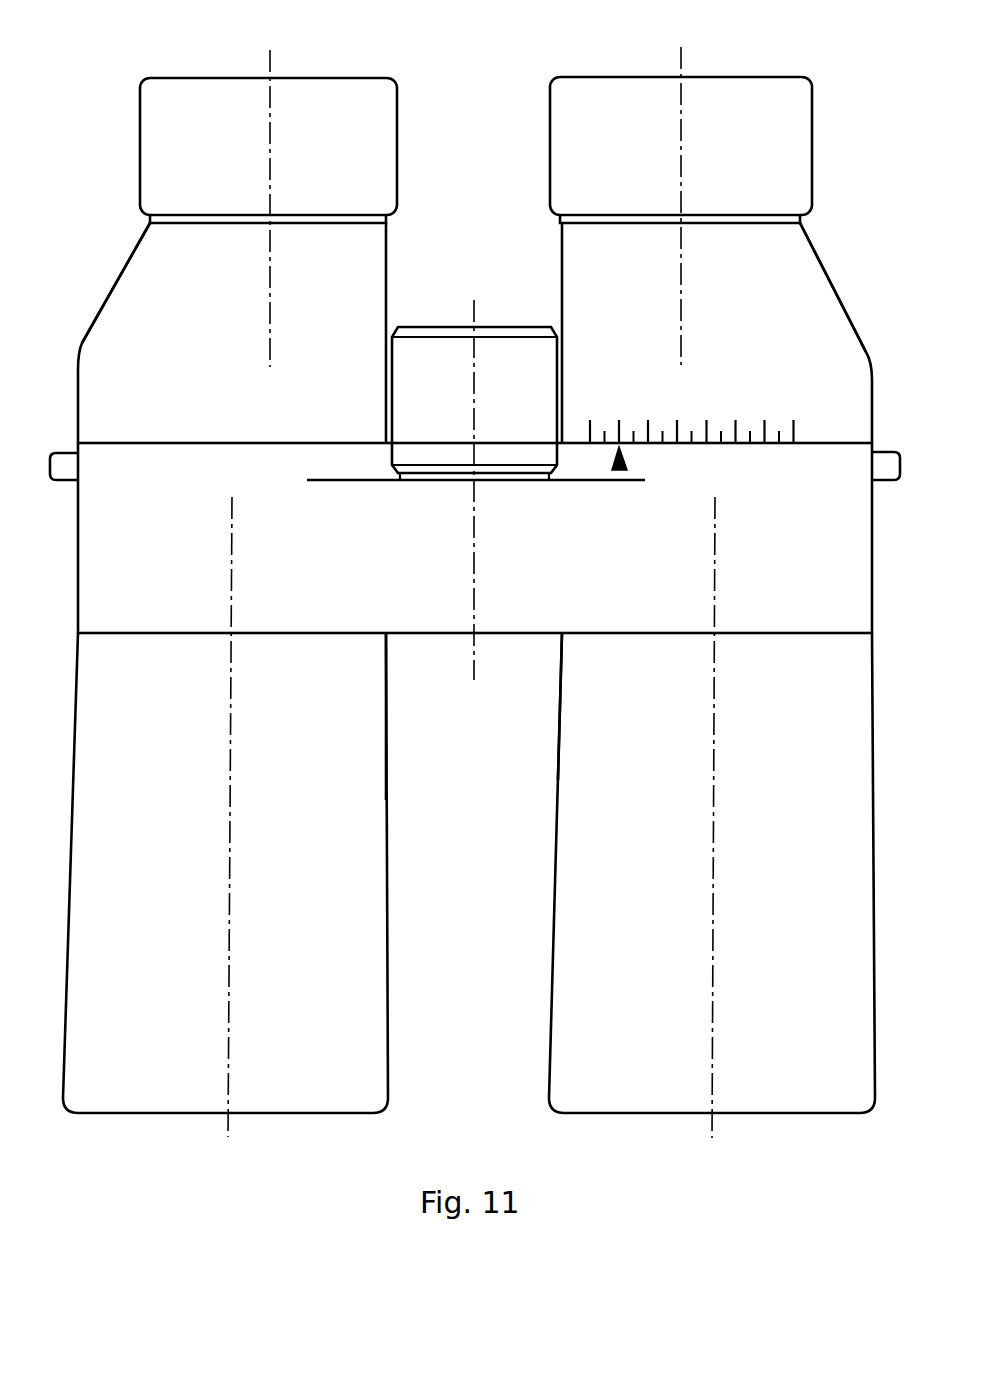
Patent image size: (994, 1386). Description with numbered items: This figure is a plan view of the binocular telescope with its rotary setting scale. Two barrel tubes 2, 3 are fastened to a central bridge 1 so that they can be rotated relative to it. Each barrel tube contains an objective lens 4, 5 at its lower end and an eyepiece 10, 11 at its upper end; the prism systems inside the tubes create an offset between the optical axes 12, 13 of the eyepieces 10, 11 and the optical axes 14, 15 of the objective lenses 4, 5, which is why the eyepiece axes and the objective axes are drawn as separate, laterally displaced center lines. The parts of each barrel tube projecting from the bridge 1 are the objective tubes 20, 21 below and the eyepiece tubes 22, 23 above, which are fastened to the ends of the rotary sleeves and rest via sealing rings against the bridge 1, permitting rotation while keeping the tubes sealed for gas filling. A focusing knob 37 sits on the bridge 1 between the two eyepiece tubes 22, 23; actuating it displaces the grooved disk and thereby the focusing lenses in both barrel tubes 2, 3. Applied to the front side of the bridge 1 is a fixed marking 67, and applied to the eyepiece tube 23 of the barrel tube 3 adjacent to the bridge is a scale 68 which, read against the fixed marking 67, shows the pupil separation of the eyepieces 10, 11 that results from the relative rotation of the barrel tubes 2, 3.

The bridge 1 is at (852, 548).
The barrel tube 2 is at (397, 879).
The barrel tube 3 is at (551, 880).
The objective lens 4 is at (182, 1084).
The objective lens 5 is at (655, 1090).
The eyepiece 10 is at (308, 104).
The eyepiece 11 is at (718, 104).
The optical axis of the eyepiece 12 is at (268, 300).
The optical axis of the eyepiece 13 is at (681, 299).
The optical axis of the objective lens 14 is at (232, 802).
The optical axis of the objective lens 15 is at (715, 798).
The objective tube 20 is at (403, 762).
The objective tube 21 is at (570, 762).
The eyepiece tube 22 is at (125, 304).
The eyepiece tube 23 is at (818, 293).
The focusing knob 37 is at (508, 352).
The fixed marking 67 is at (625, 470).
The scale 68 is at (750, 384).